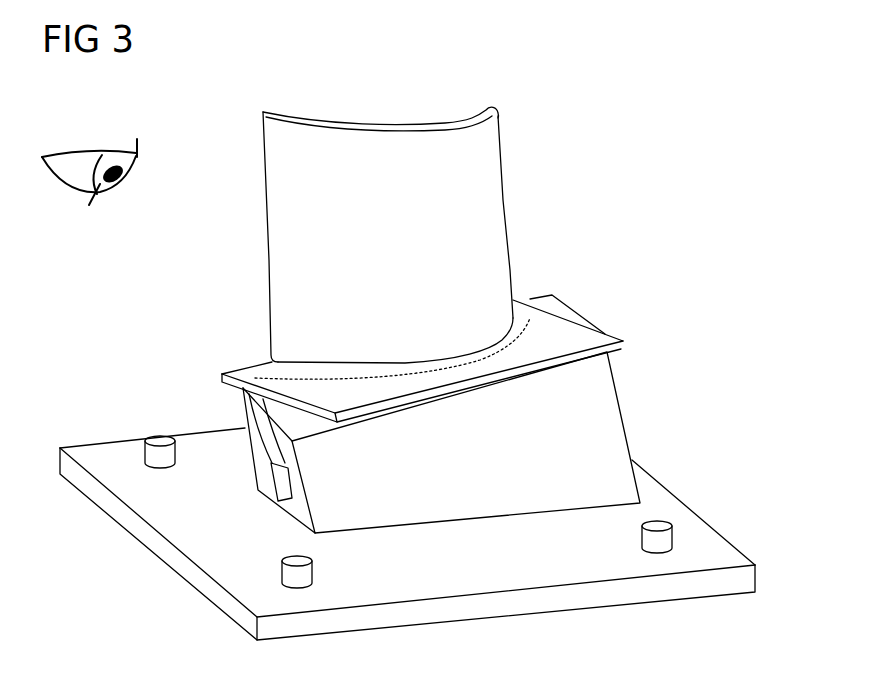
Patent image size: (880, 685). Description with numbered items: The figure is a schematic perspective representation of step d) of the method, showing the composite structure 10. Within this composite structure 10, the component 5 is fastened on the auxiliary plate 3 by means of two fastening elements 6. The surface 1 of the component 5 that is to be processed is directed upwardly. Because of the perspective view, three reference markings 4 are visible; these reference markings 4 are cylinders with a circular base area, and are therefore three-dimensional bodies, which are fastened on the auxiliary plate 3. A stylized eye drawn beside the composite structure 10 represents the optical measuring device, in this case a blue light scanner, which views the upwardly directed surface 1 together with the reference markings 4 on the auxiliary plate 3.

The surface to be processed 1 is at (437, 123).
The auxiliary plate 3 is at (710, 546).
The reference markings 4 is at (160, 437).
The component 5 is at (488, 213).
The fastening elements 6 is at (595, 415).
The composite structure 10 is at (636, 259).